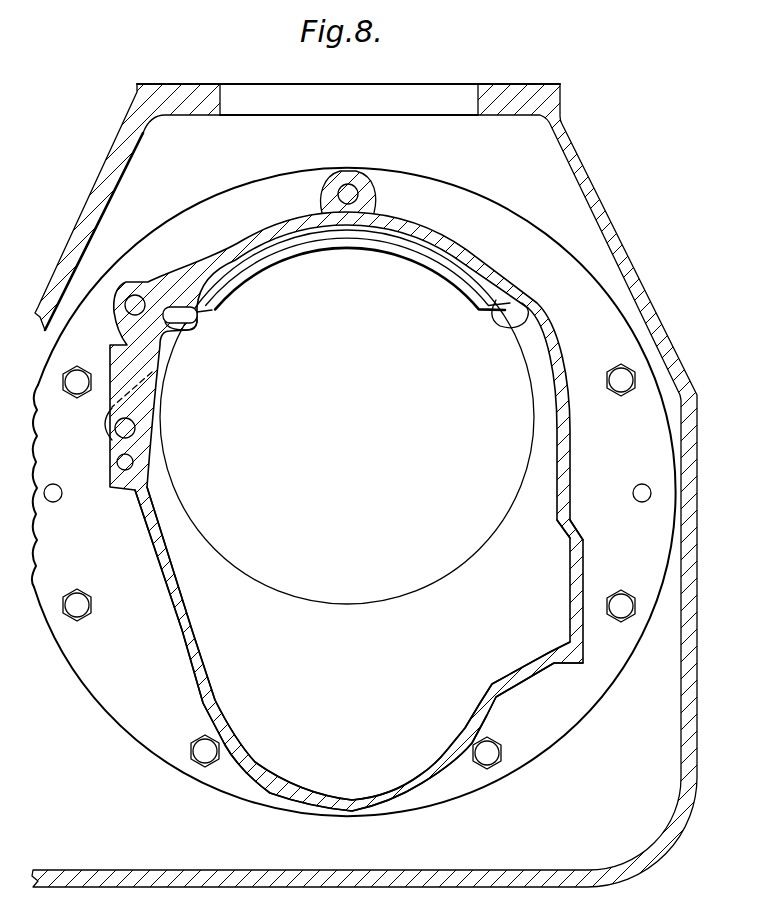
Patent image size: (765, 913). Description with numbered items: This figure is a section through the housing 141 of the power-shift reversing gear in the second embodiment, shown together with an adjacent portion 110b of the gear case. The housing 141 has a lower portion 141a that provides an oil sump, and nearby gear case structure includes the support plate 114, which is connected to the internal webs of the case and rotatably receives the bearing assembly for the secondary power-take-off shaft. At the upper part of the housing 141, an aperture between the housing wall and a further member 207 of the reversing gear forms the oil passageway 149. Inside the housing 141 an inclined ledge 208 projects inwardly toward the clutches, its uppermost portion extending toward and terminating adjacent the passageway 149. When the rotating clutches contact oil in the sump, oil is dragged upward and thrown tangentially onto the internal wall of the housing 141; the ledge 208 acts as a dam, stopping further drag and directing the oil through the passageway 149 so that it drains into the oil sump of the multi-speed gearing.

The gear case portion 110b is at (690, 713).
The housing 141 is at (183, 283).
The lower portion of the housing 141a is at (398, 790).
The passageway 149 is at (447, 247).
The further member 207 is at (208, 312).
The inclined ledge 208 is at (197, 326).
The support plate 114 is at (579, 533).